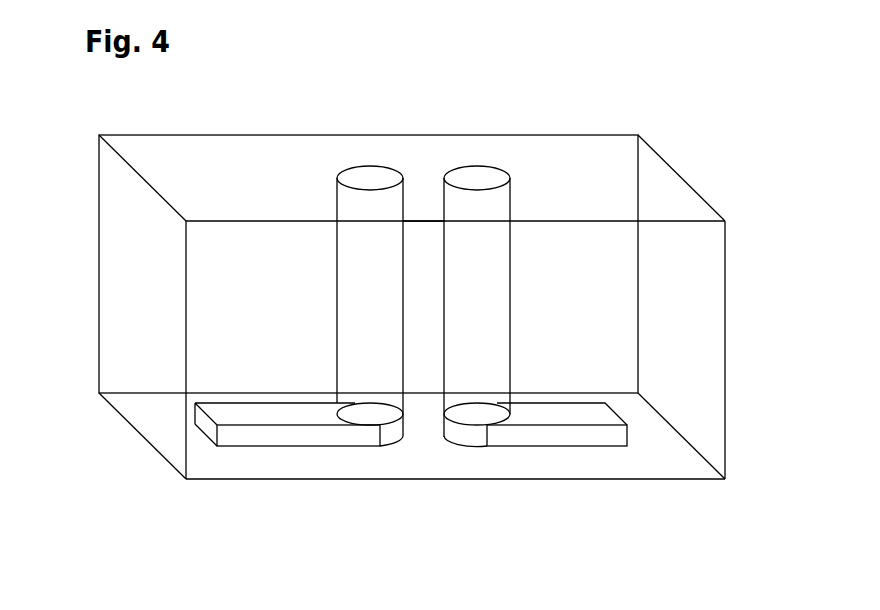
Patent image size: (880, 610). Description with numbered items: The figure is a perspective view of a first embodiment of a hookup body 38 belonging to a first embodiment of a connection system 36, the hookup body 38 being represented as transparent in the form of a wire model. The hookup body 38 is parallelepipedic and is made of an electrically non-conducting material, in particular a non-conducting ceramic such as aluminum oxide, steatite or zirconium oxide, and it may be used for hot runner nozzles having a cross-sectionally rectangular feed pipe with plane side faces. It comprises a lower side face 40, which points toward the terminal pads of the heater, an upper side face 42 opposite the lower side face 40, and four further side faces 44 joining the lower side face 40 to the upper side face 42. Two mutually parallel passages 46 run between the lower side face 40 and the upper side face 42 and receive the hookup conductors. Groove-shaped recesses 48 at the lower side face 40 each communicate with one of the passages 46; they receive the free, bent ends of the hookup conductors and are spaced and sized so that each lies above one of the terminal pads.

The connection system 36 is at (272, 113).
The hookup body 38 is at (595, 163).
The lower side face 40 is at (426, 489).
The upper side face 42 is at (426, 193).
The side faces 44 is at (147, 287).
The passages 46 is at (363, 210).
The groove-shaped recesses 48 is at (287, 412).